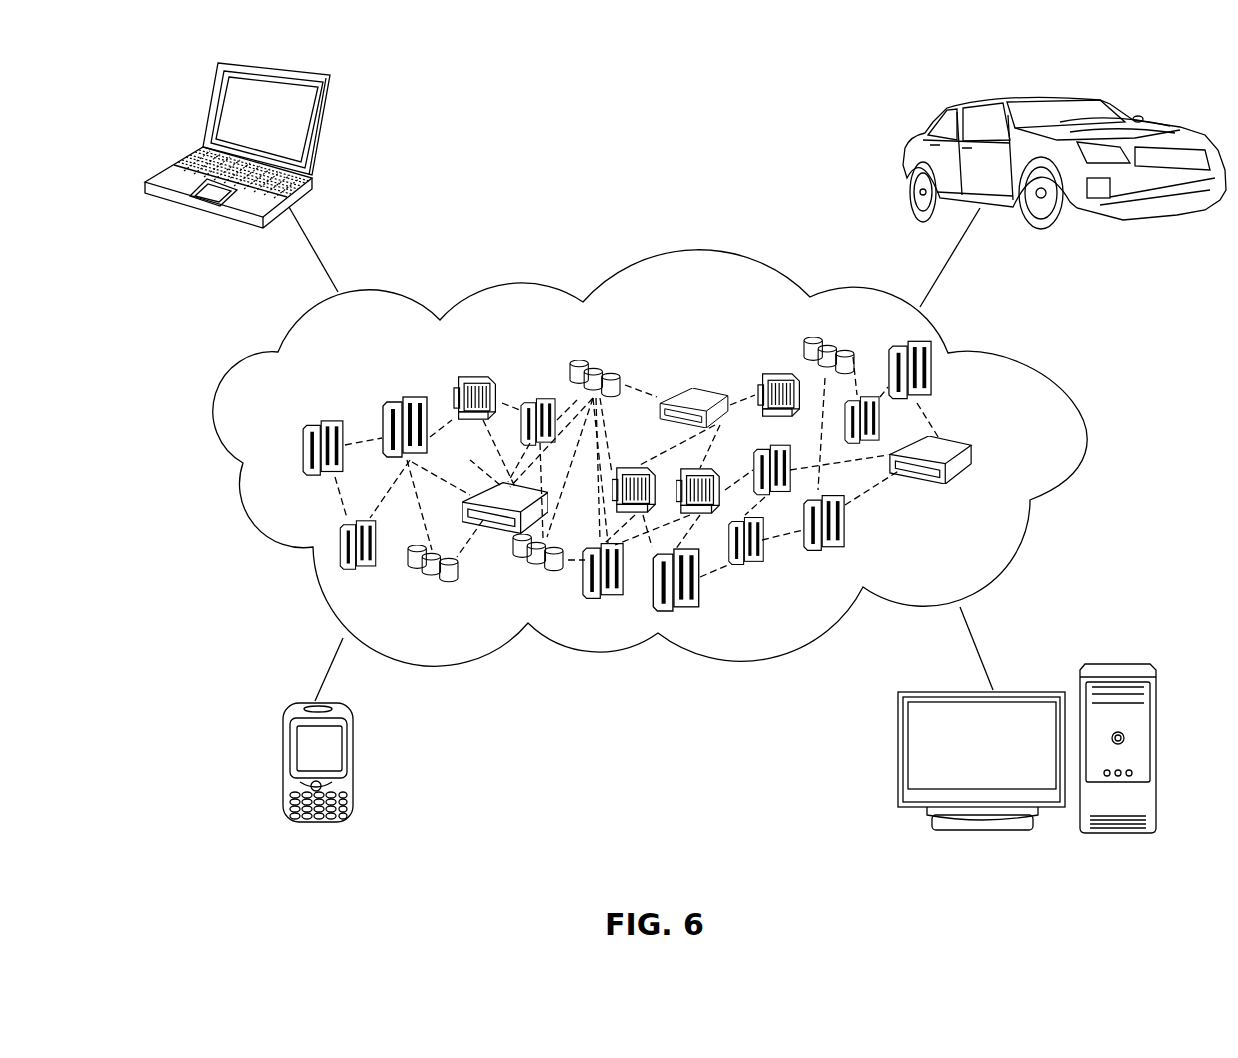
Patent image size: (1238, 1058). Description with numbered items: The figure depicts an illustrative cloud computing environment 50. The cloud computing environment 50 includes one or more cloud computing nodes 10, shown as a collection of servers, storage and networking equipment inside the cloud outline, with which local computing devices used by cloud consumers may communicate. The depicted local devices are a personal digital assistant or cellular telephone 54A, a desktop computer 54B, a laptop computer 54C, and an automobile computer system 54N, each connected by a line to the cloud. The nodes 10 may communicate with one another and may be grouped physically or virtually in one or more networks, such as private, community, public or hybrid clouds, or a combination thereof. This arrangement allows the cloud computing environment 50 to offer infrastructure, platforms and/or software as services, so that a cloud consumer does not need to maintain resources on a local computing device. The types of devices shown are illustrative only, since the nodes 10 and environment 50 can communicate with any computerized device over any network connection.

The cloud computing node 10 is at (1012, 452).
The cloud computing environment 50 is at (1040, 365).
The personal digital assistant (PDA) or cellular telephone 54A is at (281, 770).
The desktop computer 54B is at (1122, 665).
The laptop computer 54C is at (322, 133).
The automobile computer system 54N is at (912, 138).